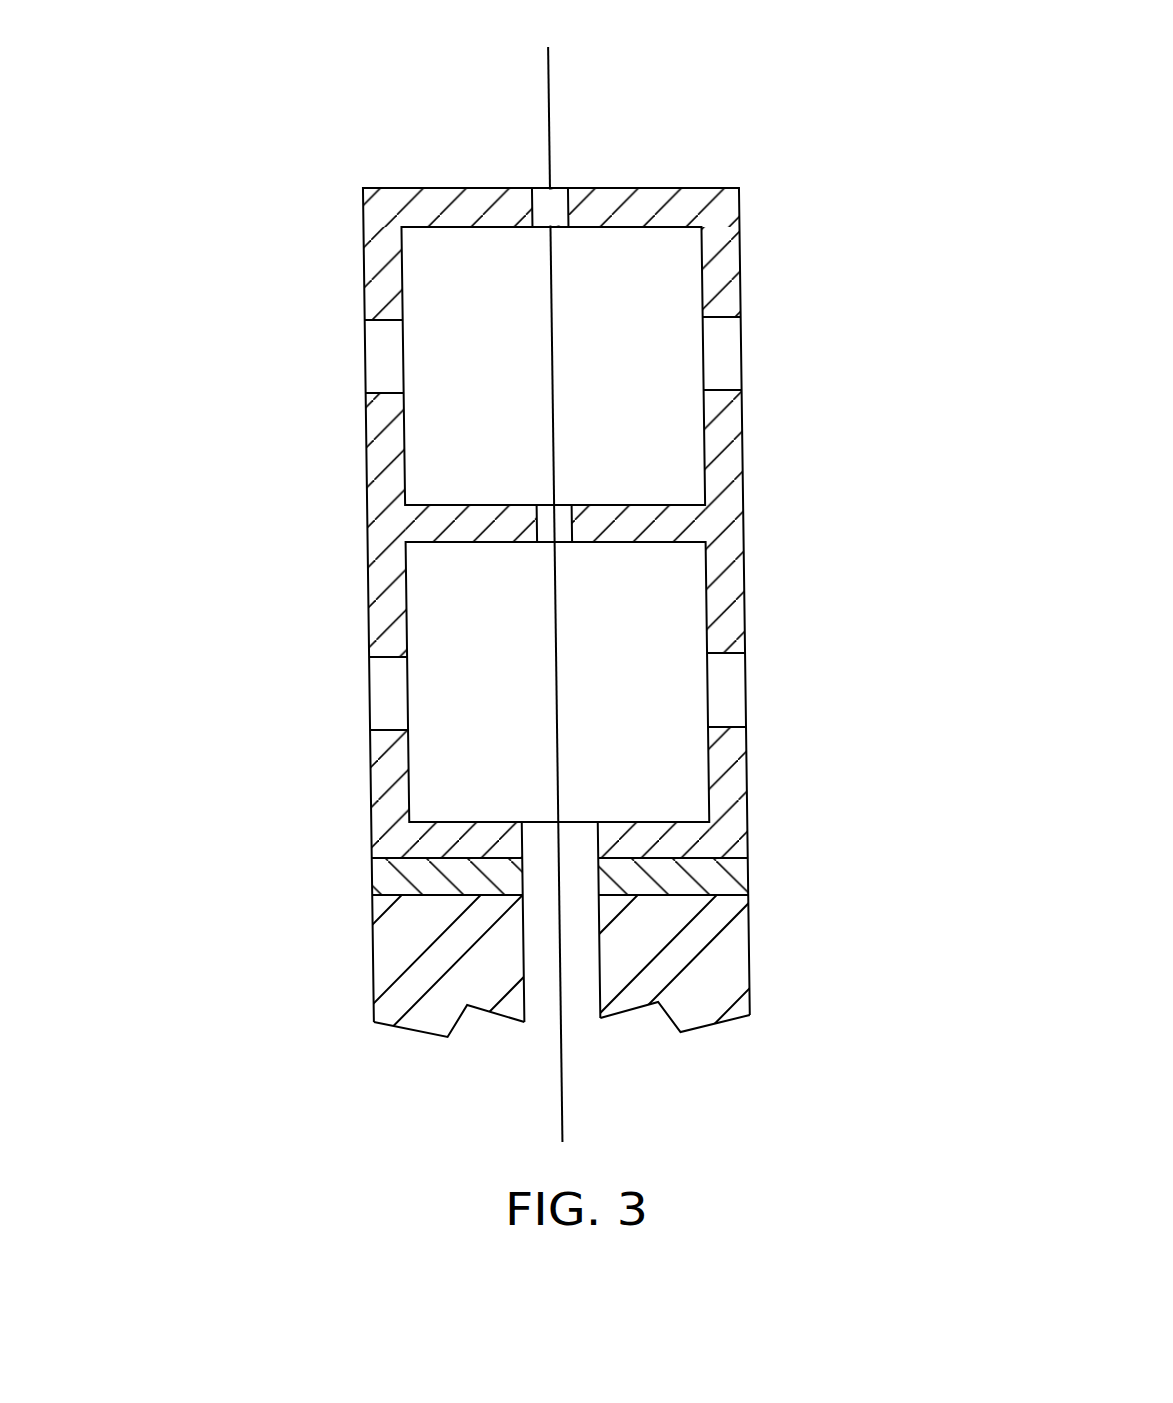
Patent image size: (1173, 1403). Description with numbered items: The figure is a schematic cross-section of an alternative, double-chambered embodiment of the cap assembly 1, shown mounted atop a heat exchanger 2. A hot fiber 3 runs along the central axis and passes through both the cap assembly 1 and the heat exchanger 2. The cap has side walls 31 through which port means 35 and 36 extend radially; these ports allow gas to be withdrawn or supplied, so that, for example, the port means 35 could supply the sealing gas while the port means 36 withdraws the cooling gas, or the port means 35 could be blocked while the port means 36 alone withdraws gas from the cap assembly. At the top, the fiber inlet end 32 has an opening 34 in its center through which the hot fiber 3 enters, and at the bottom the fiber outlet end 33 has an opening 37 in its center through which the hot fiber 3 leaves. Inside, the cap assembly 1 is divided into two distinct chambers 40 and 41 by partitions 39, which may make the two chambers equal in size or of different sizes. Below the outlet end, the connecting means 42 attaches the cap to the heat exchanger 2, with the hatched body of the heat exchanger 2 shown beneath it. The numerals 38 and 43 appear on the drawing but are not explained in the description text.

The cap assembly 1 is at (317, 200).
The heat exchanger 2 is at (750, 945).
The hot fiber 3 is at (548, 95).
The side walls 31 is at (363, 258).
The fiber inlet end 32 is at (413, 188).
The fiber outlet end 33 is at (410, 811).
The opening 34 is at (563, 185).
The port means 35 is at (363, 355).
The port means 36 is at (367, 687).
The opening 37 is at (573, 822).
The partition plate 38 is at (568, 505).
The partitions 39 is at (465, 505).
The chamber 40 is at (558, 682).
The chamber 41 is at (553, 366).
The connecting means 42 is at (373, 885).
The base groove 43 is at (578, 897).